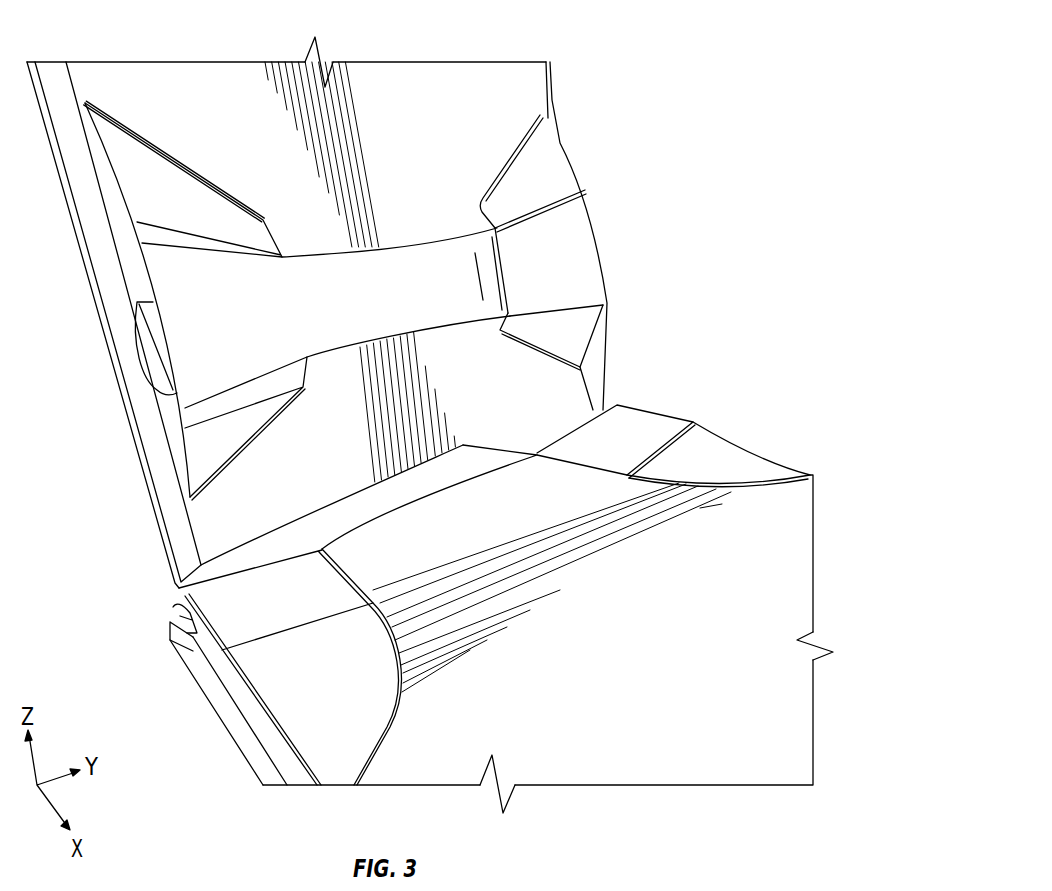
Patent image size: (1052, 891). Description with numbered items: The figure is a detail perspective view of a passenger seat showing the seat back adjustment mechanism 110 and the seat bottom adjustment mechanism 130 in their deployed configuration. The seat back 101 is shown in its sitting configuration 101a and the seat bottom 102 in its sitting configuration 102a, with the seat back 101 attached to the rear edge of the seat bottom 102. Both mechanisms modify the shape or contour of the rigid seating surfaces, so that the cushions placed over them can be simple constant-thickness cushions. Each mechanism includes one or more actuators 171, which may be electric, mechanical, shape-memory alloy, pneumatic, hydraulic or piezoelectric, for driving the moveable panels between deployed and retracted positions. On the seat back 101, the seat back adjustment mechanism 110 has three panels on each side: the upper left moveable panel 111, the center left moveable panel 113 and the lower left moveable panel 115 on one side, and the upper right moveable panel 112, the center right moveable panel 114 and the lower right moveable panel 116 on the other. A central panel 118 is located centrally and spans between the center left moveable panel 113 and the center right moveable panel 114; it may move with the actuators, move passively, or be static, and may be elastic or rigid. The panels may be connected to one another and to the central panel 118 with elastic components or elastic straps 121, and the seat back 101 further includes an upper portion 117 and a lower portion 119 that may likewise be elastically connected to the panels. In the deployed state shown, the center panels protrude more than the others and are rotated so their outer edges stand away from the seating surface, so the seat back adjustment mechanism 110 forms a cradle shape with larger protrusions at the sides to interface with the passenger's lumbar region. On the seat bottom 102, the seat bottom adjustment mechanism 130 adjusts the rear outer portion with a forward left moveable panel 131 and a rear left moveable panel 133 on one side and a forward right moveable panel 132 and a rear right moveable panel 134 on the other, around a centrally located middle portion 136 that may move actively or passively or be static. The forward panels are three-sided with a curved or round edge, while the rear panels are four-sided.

The seat back 101 is at (180, 102).
The sitting configuration of the seat back 101a is at (263, 95).
The seat bottom 102 is at (713, 718).
The sitting configuration of the seat bottom 102a is at (633, 718).
The seat back adjustment mechanism 110 is at (661, 95).
The upper left moveable panel 111 is at (548, 170).
The upper right moveable panel 112 is at (168, 197).
The center left moveable panel 113 is at (578, 245).
The center right moveable panel 114 is at (197, 317).
The lower left moveable panel 115 is at (567, 332).
The lower right moveable panel 116 is at (217, 443).
The upper portion 117 is at (378, 160).
The central panel 118 is at (417, 281).
The lower portion 119 is at (337, 452).
The elastic straps 121 is at (580, 198).
The seat bottom adjustment mechanism 130 is at (228, 772).
The forward left moveable panel 131 is at (712, 462).
The forward right moveable panel 132 is at (317, 690).
The rear left moveable panel 133 is at (627, 427).
The rear right moveable panel 134 is at (210, 620).
The middle portion 136 is at (560, 635).
The actuator 171 is at (155, 365).